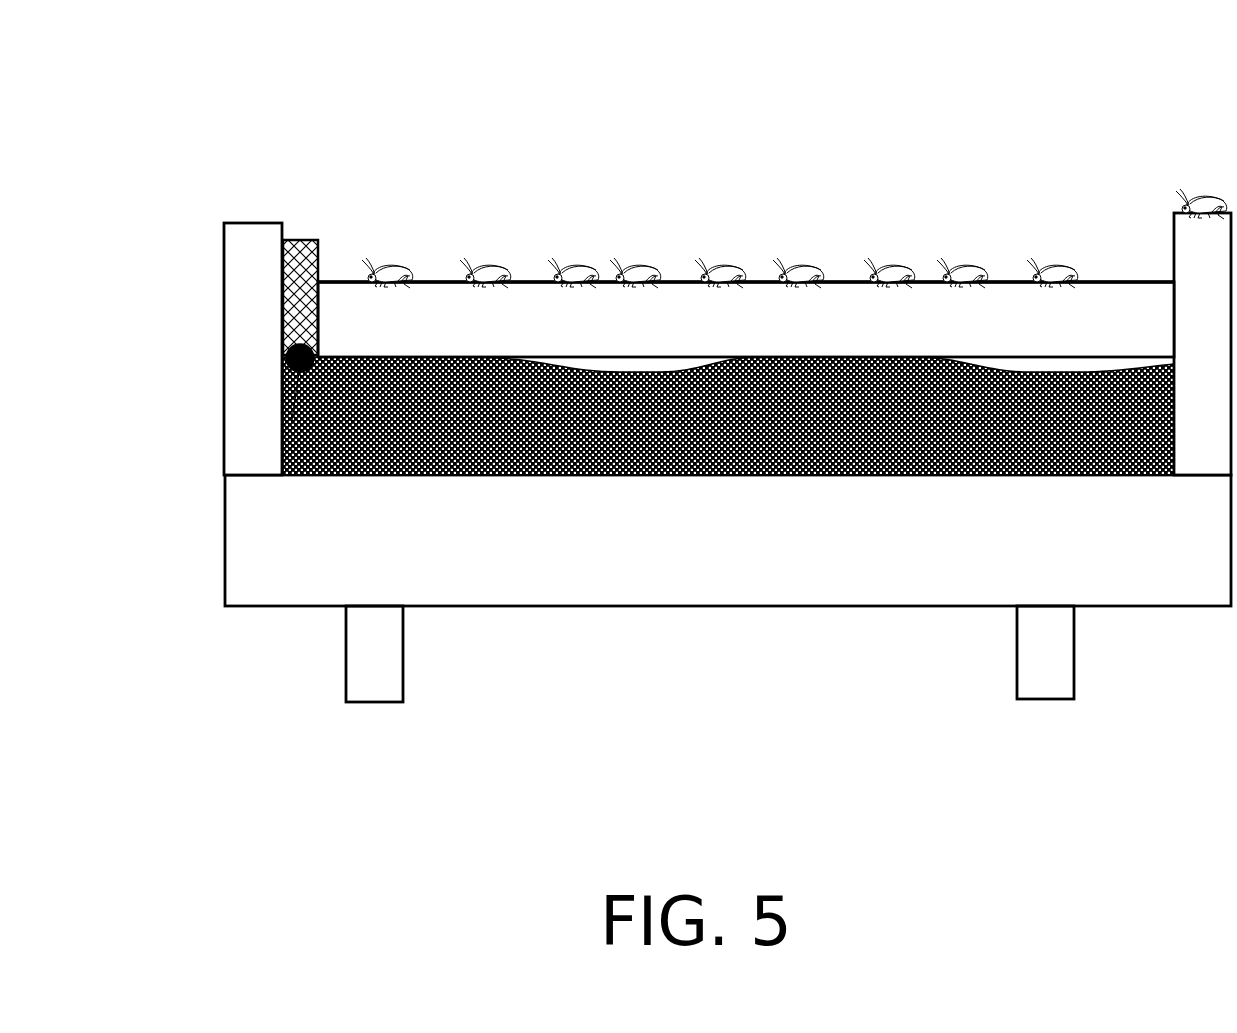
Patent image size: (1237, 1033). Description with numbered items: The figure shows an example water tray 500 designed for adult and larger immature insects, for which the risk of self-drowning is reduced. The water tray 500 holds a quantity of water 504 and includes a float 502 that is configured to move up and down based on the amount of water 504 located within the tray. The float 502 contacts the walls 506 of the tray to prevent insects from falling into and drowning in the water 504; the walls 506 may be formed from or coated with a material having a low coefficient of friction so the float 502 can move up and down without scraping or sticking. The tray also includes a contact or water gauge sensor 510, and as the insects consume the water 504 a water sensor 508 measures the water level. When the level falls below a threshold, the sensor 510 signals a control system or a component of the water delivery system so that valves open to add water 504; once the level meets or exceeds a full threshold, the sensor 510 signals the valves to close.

The water tray 500 is at (204, 80).
The float 502 is at (805, 331).
The water 504 is at (348, 477).
The walls 506 is at (273, 361).
The water sensor 508 is at (283, 433).
The contact or water gauge sensor 510 is at (309, 226).